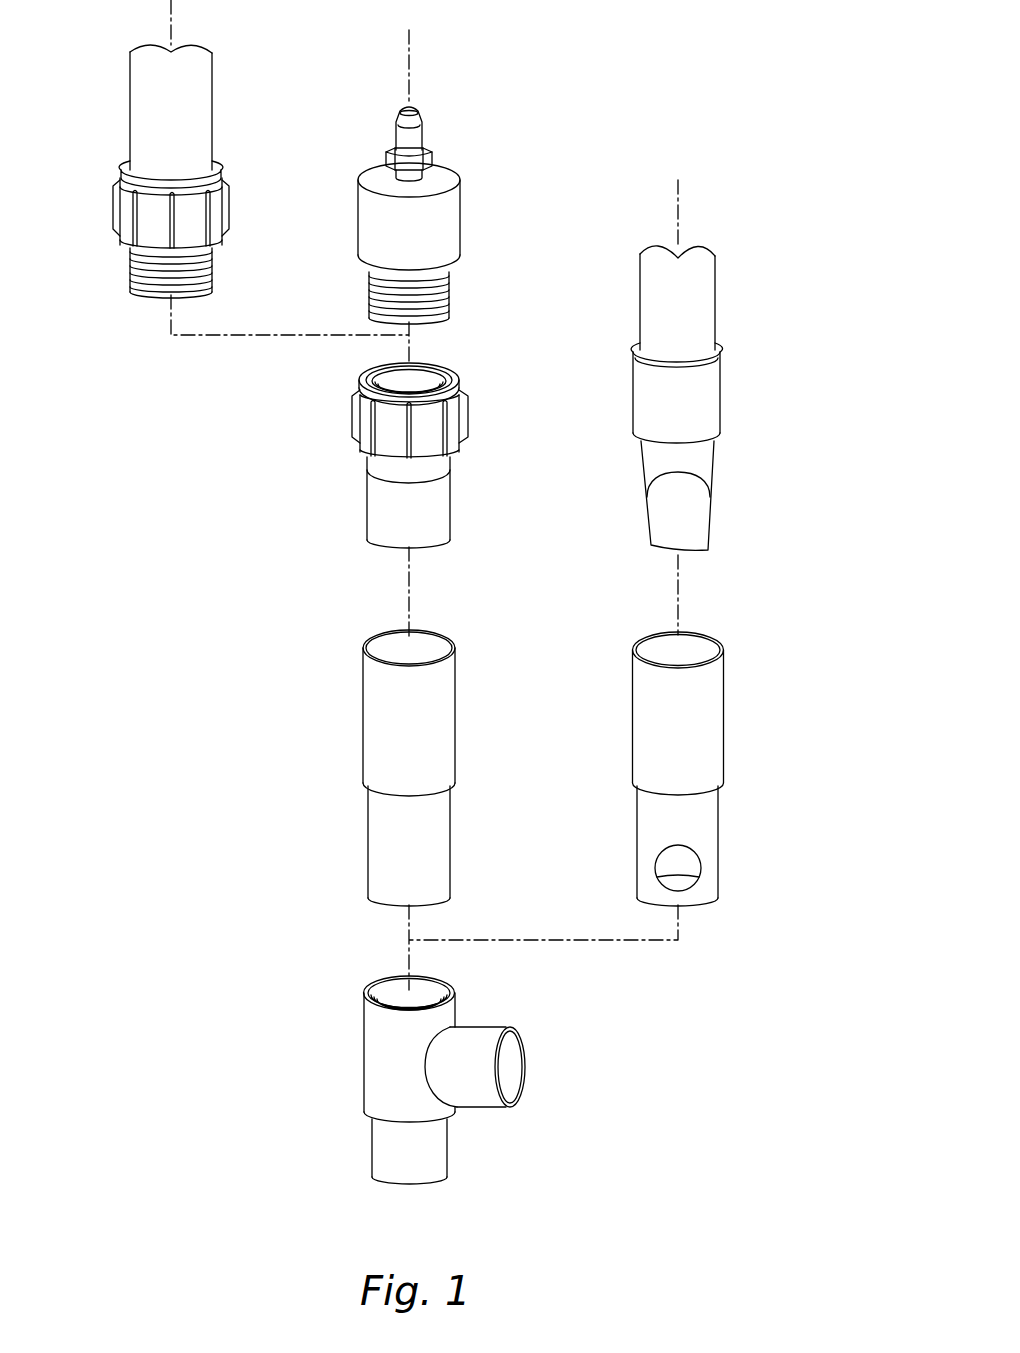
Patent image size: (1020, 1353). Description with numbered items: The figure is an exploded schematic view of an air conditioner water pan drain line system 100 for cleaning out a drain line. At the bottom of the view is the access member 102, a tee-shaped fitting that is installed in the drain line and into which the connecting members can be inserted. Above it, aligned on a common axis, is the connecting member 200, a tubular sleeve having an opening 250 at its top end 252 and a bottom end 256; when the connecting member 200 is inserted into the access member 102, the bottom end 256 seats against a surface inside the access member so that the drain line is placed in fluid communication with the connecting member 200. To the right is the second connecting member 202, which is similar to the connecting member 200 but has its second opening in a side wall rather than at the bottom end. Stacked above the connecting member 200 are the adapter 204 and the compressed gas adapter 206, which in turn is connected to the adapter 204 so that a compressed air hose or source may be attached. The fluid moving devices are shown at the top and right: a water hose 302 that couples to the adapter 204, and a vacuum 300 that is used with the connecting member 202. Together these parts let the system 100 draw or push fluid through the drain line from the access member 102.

The air conditioner water pan drain line system 100 is at (183, 744).
The access member 102 is at (525, 1067).
The connecting member 200 is at (363, 693).
The connecting member 202 is at (723, 720).
The adapter 204 is at (452, 500).
The compressed gas adapter 206 is at (461, 207).
The opening 250 is at (430, 643).
The top end 252 is at (455, 642).
The bottom end 256 is at (375, 900).
The vacuum 300 is at (722, 392).
The water hose 302 is at (214, 97).